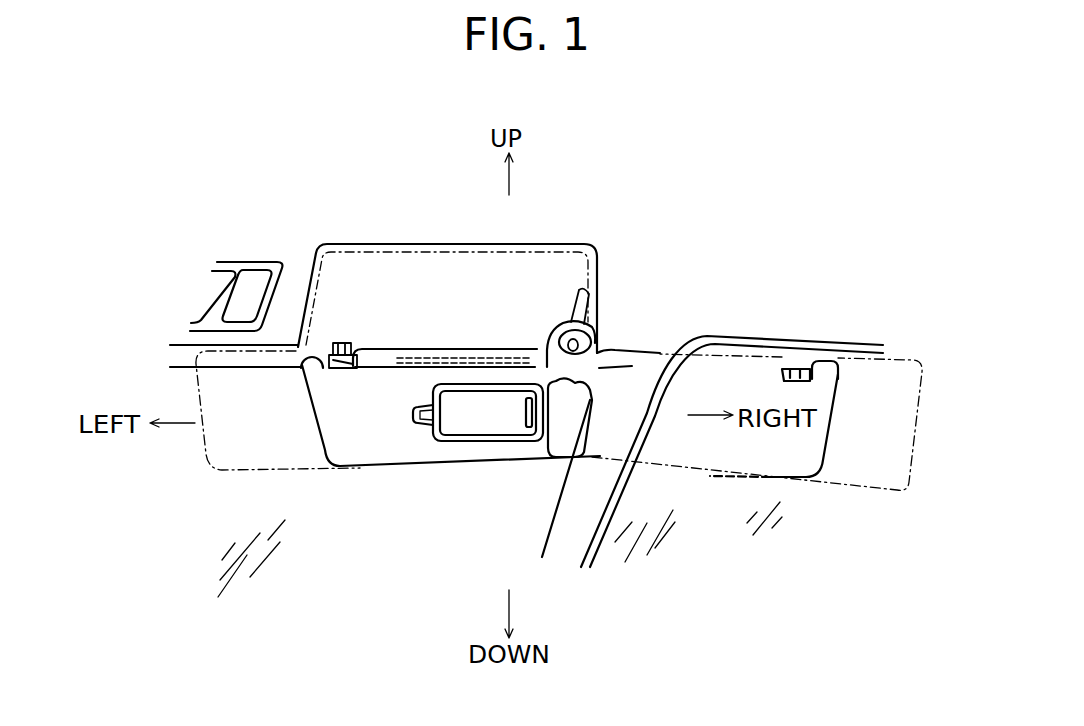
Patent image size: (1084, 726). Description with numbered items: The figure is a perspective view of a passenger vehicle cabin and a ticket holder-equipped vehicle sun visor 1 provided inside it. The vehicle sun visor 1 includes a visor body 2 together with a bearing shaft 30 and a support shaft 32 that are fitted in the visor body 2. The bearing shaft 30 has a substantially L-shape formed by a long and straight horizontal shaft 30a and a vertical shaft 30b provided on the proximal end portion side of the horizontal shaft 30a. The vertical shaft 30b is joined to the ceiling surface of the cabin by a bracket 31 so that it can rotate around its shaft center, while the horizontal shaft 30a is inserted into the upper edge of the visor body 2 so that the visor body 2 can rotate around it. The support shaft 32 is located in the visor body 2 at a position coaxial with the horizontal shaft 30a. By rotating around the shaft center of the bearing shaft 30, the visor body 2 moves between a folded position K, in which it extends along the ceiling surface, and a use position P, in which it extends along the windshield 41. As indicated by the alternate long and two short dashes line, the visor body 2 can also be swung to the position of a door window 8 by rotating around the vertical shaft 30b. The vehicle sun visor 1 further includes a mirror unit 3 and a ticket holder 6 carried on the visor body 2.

The vehicle sun visor 1 is at (301, 459).
The visor body 2 is at (337, 454).
The mirror unit 3 is at (508, 442).
The ticket holder 6 is at (416, 424).
The door window 8 is at (692, 520).
The bearing shaft 30 is at (553, 326).
The horizontal shaft 30a is at (558, 332).
The vertical shaft 30b is at (612, 357).
The bracket 31 is at (597, 340).
The support shaft 32 is at (343, 344).
The windshield 41 is at (243, 560).
The folded position K is at (440, 297).
The use position P is at (371, 440).